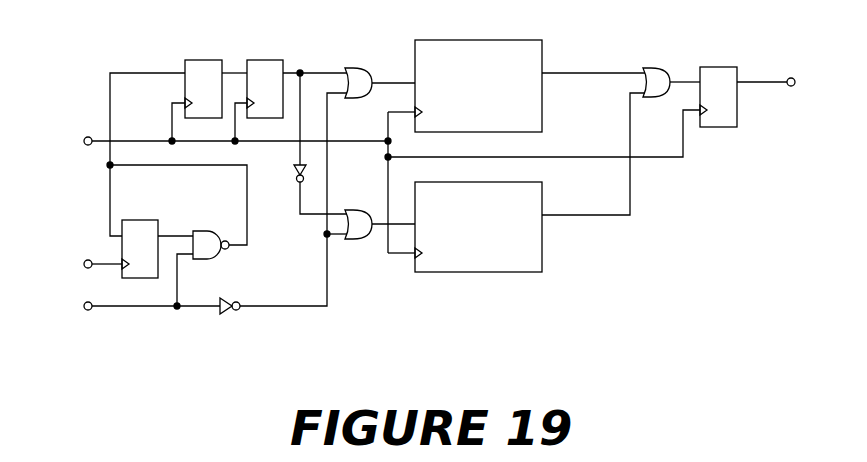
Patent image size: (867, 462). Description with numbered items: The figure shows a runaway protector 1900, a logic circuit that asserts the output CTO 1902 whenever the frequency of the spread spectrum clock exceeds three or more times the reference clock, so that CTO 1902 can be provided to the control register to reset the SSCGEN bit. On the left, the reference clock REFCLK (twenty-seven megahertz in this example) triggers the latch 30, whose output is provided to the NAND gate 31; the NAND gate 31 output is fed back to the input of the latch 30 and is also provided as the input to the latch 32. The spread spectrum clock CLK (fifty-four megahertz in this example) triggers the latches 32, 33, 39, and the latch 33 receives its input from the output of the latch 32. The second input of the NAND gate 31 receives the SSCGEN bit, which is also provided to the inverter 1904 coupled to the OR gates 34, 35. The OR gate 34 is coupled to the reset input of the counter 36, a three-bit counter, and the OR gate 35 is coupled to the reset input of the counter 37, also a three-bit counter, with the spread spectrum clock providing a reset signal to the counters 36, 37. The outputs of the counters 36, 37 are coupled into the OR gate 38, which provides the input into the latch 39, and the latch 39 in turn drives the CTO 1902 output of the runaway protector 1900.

The runaway protector 1900 is at (156, 43).
The latch 30 is at (129, 218).
The NAND gate 31 is at (201, 229).
The latch 32 is at (199, 58).
The latch 33 is at (257, 58).
The OR gate 34 is at (349, 66).
The OR gate 35 is at (349, 208).
The counter 36 is at (546, 50).
The counter 37 is at (546, 195).
The OR gate 38 is at (658, 66).
The latch 39 is at (739, 65).
The CTO 1902 is at (791, 88).
The inverter 1904 is at (221, 315).